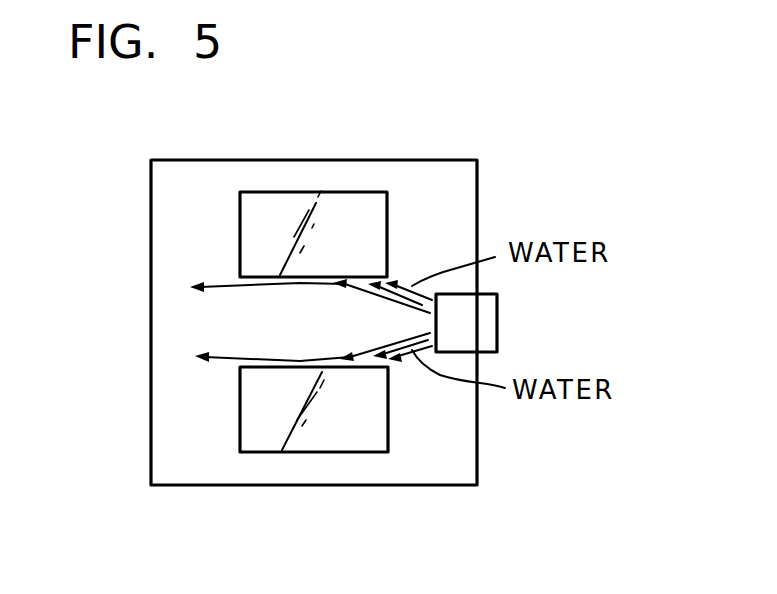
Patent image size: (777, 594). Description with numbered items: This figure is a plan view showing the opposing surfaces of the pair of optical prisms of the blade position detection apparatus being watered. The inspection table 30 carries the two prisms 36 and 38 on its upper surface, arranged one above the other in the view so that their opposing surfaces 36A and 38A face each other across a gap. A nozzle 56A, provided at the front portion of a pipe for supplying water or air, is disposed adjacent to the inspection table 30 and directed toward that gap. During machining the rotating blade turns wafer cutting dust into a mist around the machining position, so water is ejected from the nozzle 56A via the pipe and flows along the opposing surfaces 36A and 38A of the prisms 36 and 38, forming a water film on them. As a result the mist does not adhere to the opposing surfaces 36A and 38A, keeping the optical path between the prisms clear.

The inspection table 30 is at (445, 473).
The prism 36 is at (308, 443).
The opposing surface of prism 36 36A is at (260, 367).
The prism 38 is at (328, 192).
The opposing surface of prism 38 38A is at (268, 278).
The nozzle 56A is at (490, 329).